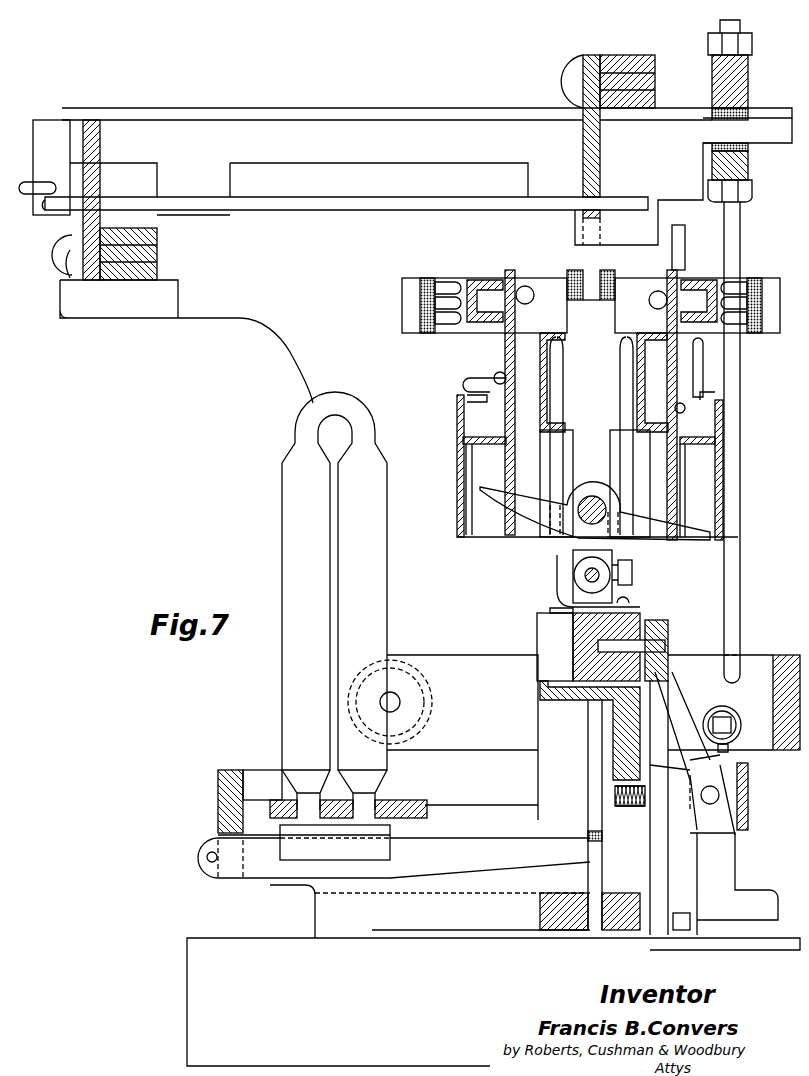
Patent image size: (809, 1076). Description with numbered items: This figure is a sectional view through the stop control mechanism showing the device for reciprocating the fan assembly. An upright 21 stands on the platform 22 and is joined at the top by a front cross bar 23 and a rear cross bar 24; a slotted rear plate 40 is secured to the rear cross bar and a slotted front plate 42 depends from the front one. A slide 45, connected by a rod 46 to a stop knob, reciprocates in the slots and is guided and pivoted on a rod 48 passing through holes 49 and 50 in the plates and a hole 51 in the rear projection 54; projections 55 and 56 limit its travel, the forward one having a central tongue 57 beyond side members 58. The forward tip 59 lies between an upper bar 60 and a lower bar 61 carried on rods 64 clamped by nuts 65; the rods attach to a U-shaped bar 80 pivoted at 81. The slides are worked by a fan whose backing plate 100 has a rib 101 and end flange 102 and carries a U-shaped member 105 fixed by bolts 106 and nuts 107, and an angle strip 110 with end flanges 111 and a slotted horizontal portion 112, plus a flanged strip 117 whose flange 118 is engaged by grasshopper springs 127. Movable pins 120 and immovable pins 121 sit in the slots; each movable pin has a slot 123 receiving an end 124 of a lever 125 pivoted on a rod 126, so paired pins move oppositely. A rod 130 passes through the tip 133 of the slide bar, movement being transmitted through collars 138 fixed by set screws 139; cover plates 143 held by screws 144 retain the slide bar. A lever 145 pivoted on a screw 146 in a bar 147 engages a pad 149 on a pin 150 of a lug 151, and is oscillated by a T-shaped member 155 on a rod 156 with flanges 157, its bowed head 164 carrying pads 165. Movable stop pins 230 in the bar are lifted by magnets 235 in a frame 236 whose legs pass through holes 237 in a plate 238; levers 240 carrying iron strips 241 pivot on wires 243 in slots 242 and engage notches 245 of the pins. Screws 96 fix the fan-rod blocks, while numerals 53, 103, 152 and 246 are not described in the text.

The upright 21 is at (315, 289).
The platform 22 is at (493, 1002).
The front cross bar 23 is at (628, 62).
The rear cross bar 24 is at (160, 248).
The rear plate 40 is at (85, 290).
The front plate 42 is at (582, 165).
The slide 45 is at (427, 133).
The rod 46 is at (30, 185).
The guide rod 48 is at (308, 212).
The hole 49 is at (62, 248).
The hole 50 is at (602, 193).
The hole 51 is at (52, 207).
The bracket part 53 is at (675, 183).
The rear projection 54 is at (37, 173).
The second projection 55 is at (165, 195).
The third projection 56 is at (633, 161).
The central tongue 57 is at (595, 255).
The side member 58 is at (520, 182).
The forward tip 59 is at (775, 135).
The upper bar 60 is at (750, 92).
The lower bar 61 is at (750, 173).
The rod 64 is at (742, 250).
The nut 65 is at (750, 38).
The U-shaped bar 80 is at (788, 658).
The pivot 81 is at (390, 700).
The fastening screw 96 is at (434, 412).
The backing plate 100 is at (540, 270).
The central rib 101 is at (540, 350).
The flange 102 is at (553, 452).
The link 103 is at (636, 437).
The U-shaped member 105 is at (455, 285).
The bolt 106 is at (477, 280).
The nut 107 is at (420, 308).
The angle strip 110 is at (457, 530).
The flange 111 is at (462, 505).
The horizontal portion 112 is at (466, 462).
The flanged strip 117 is at (463, 440).
The flange 118 is at (467, 402).
The movable pin 120 is at (500, 342).
The immovable pin 121 is at (688, 218).
The slot 123 is at (540, 505).
The lever end 124 is at (558, 470).
The lever 125 is at (570, 440).
The rod 126 is at (573, 560).
The spring 127 is at (440, 382).
The rod 130 is at (585, 583).
The tip 133 is at (632, 588).
The collar 138 is at (557, 575).
The set screw 139 is at (675, 560).
The cover plate 143 is at (550, 610).
The screw 144 is at (630, 604).
The lever 145 is at (652, 938).
The pivot screw 146 is at (620, 785).
The bar 147 is at (625, 728).
The pad 149 is at (666, 647).
The pin 150 is at (668, 624).
The lug 151 is at (573, 662).
The block 152 is at (573, 628).
The T-shaped member 155 is at (700, 886).
The rod 156 is at (748, 790).
The flange 157 is at (712, 799).
The head 164 is at (685, 708).
The pad 165 is at (682, 930).
The movable stop pin 230 is at (560, 865).
The magnet 235 is at (297, 533).
The frame 236 is at (252, 790).
The hole 237 is at (380, 790).
The plate 238 is at (412, 802).
The lever 240 is at (394, 865).
The iron strip 241 is at (335, 842).
The slot 242 is at (218, 836).
The wire 243 is at (210, 862).
The notch 245 is at (590, 870).
The plate 246 is at (560, 880).